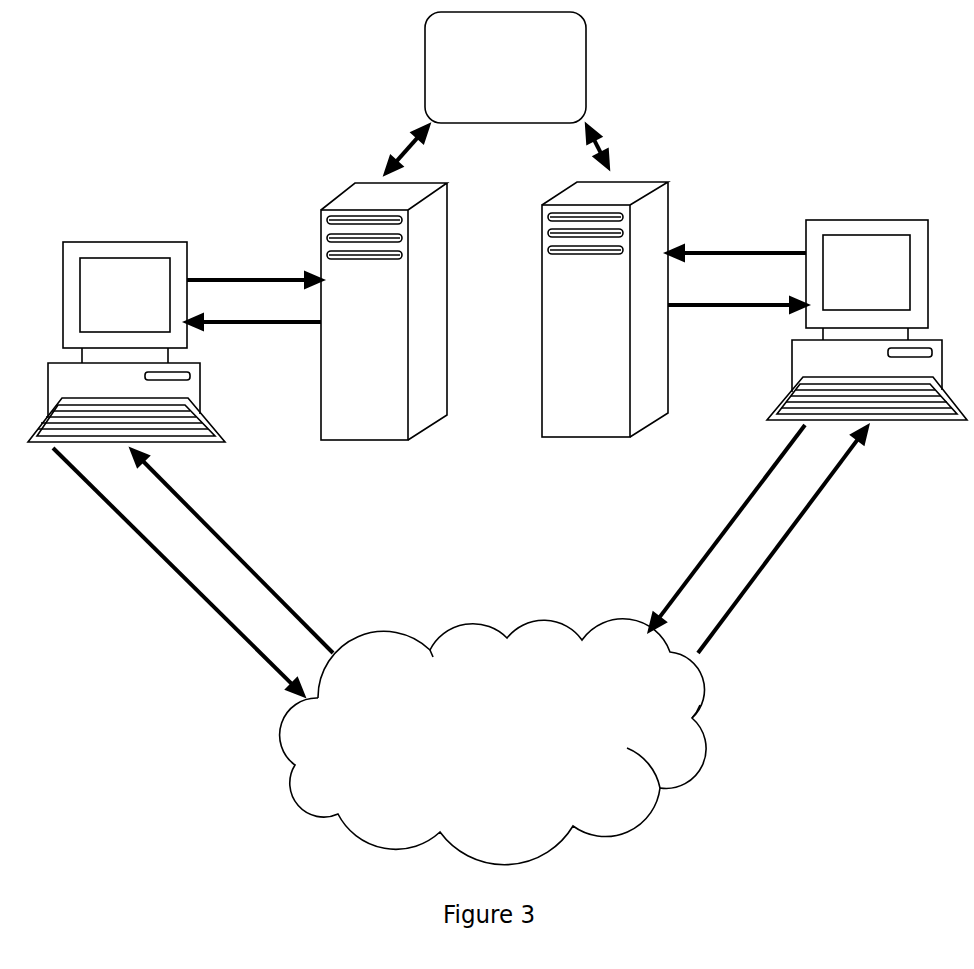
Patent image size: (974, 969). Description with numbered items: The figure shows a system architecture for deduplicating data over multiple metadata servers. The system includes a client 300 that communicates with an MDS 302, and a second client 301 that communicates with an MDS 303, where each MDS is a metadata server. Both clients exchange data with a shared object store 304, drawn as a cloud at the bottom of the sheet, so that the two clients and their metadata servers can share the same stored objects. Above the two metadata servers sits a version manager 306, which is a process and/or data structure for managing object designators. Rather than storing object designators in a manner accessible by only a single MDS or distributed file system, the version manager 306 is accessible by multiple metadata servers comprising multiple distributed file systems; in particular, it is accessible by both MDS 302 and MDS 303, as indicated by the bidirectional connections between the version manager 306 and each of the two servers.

The client 300 is at (108, 309).
The client 301 is at (849, 285).
The MDS 302 is at (348, 353).
The MDS 303 is at (570, 348).
The object store 304 is at (490, 753).
The version manager 306 is at (488, 78).